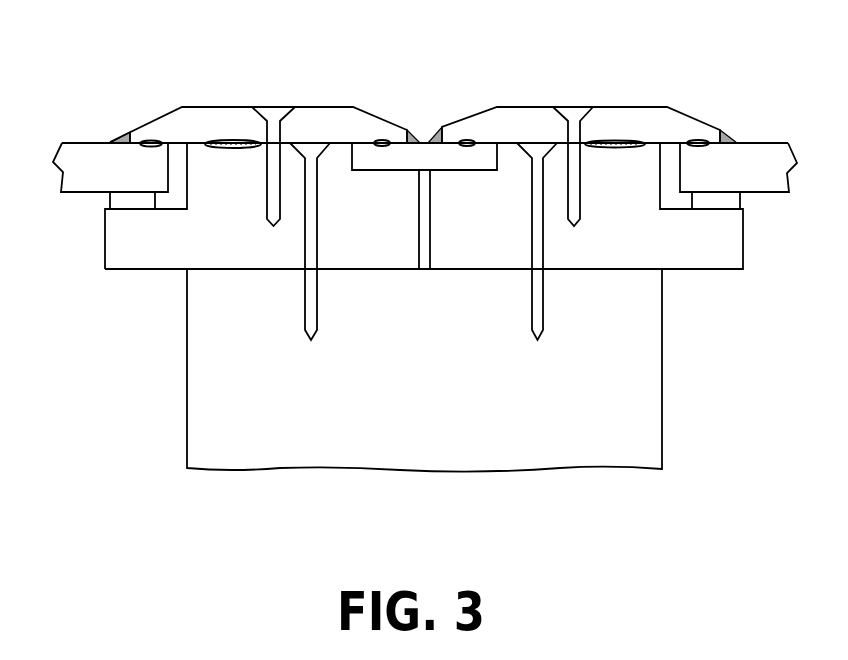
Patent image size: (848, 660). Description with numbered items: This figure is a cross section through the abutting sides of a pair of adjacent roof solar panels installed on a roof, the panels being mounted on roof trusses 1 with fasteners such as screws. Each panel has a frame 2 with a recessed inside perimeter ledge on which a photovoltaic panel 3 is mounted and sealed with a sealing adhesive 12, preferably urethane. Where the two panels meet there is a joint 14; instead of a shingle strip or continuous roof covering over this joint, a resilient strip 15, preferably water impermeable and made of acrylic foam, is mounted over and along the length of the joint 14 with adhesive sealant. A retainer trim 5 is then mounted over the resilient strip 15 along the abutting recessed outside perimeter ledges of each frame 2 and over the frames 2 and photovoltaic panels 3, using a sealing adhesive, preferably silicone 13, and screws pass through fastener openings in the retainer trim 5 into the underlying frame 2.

The roof truss 1 is at (258, 427).
The frame 2 is at (230, 248).
The photovoltaic panel 3 is at (77, 143).
The retainer trim 5 is at (340, 107).
The sealing adhesive 12 is at (110, 199).
The silicone 13 is at (120, 143).
The joint 14 is at (425, 250).
The resilient strip 15 is at (486, 158).